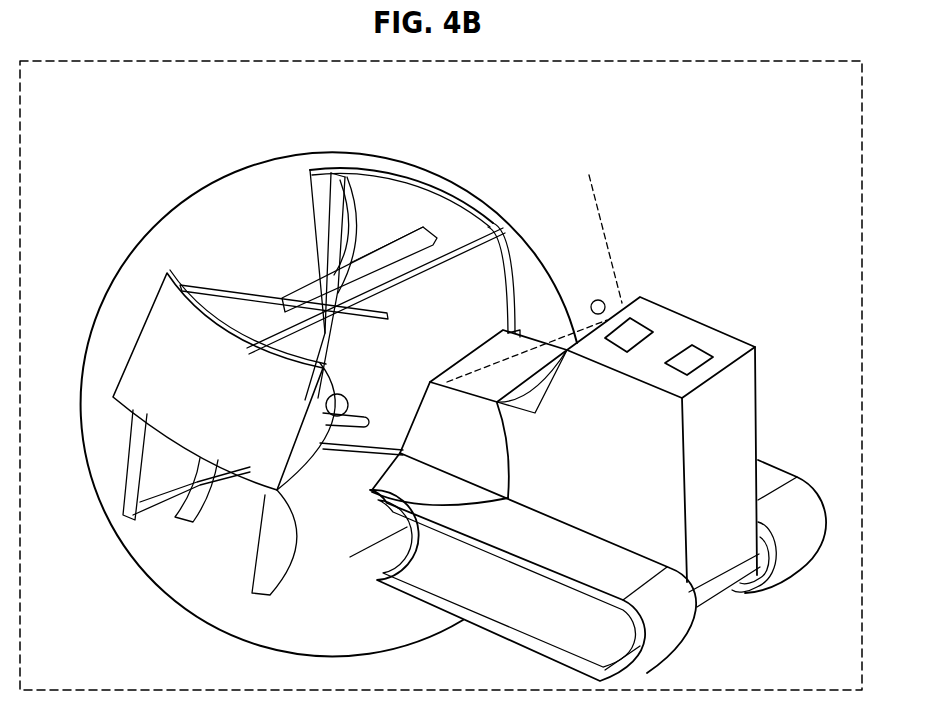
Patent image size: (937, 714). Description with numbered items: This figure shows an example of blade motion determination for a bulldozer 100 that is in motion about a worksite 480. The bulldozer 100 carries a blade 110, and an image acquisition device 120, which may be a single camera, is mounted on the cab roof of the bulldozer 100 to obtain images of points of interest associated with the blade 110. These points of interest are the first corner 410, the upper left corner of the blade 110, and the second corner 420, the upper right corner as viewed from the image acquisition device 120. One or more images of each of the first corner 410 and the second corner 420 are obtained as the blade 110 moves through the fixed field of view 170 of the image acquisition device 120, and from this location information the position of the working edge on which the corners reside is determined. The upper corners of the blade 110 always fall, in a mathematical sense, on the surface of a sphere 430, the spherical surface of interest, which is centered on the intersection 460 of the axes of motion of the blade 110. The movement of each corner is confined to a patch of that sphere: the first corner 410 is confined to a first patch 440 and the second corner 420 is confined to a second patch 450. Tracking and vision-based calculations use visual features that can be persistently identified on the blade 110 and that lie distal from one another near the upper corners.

The bulldozer 100 is at (758, 393).
The blade 110 is at (328, 258).
The image acquisition device 120 is at (636, 330).
The fixed field of view 170 is at (605, 237).
The first corner 410 is at (277, 491).
The second corner 420 is at (332, 176).
The sphere 430 is at (120, 266).
The first patch 440 is at (165, 430).
The second patch 450 is at (396, 207).
The intersection of the axes of motion 460 is at (334, 350).
The worksite 480 is at (93, 60).